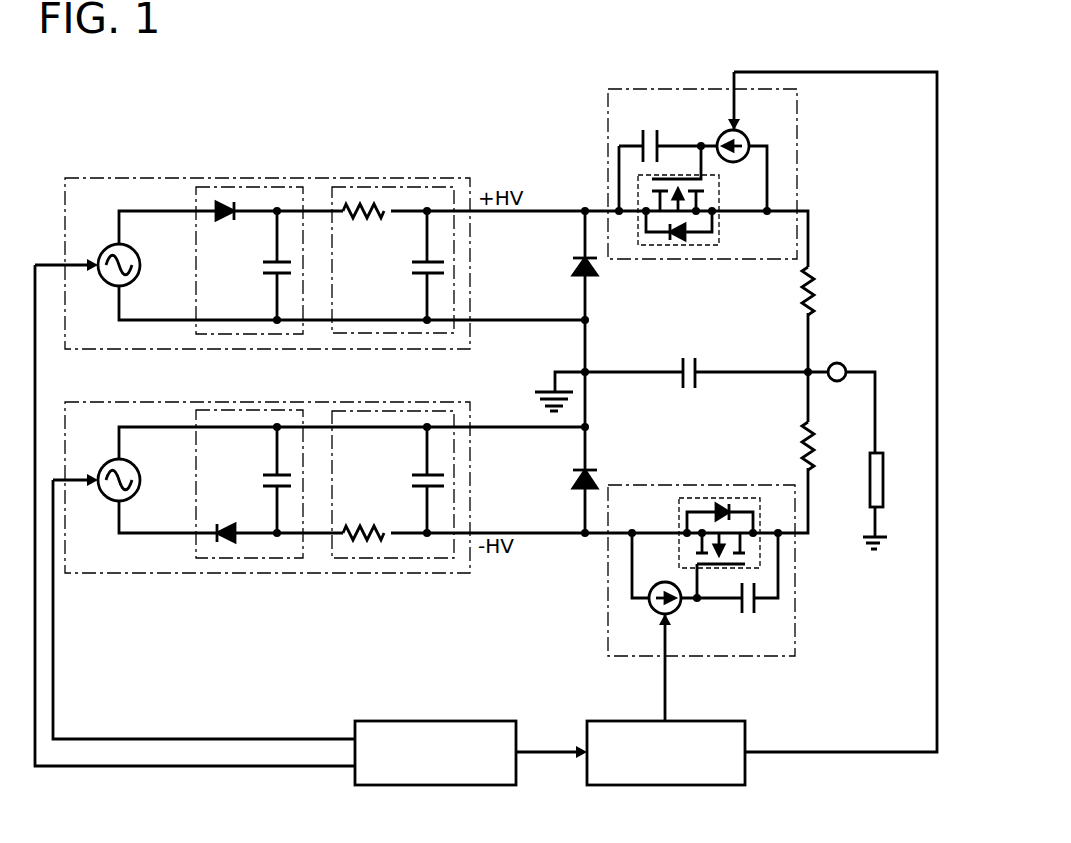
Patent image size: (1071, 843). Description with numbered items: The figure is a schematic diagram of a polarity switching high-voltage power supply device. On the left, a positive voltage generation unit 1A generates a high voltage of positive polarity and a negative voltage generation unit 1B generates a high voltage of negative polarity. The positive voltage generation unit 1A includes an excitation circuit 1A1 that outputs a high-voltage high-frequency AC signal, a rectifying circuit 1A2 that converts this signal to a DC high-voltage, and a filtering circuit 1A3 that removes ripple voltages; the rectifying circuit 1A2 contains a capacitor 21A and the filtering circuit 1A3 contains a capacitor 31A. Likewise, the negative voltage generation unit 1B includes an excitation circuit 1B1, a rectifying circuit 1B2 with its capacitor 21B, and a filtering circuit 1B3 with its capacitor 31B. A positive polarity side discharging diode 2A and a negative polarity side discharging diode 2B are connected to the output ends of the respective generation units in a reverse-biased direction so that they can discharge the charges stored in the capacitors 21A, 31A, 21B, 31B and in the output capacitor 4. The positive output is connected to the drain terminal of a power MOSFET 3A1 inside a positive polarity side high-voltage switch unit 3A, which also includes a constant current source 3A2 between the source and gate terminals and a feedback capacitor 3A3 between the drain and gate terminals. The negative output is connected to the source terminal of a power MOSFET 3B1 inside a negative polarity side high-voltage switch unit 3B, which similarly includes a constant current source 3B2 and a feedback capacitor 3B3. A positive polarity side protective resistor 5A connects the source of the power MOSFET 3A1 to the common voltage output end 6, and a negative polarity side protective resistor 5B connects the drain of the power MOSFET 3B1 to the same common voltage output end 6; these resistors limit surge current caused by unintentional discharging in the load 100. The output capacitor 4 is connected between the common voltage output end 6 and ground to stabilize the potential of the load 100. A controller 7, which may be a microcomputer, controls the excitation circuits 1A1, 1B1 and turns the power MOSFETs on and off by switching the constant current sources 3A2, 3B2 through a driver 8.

The positive voltage generation unit 1A is at (311, 177).
The excitation circuit 1A1 is at (109, 246).
The rectifying circuit 1A2 is at (257, 186).
The filtering circuit 1A3 is at (405, 186).
The capacitor 21A is at (266, 259).
The capacitor 31A is at (416, 259).
The negative voltage generation unit 1B is at (313, 400).
The excitation circuit 1B1 is at (109, 461).
The rectifying circuit 1B2 is at (247, 409).
The filtering circuit 1B3 is at (397, 410).
The capacitor 21B is at (266, 472).
The capacitor 31B is at (416, 472).
The positive polarity side discharging diode 2A is at (572, 267).
The negative polarity side discharging diode 2B is at (573, 483).
The positive polarity side high-voltage switch unit 3A is at (797, 128).
The power MOSFET 3A1 is at (720, 233).
The constant current source 3A2 is at (747, 133).
The feedback capacitor 3A3 is at (657, 132).
The negative polarity side high-voltage switch unit 3B is at (795, 628).
The power MOSFET 3B1 is at (679, 512).
The constant current source 3B2 is at (653, 613).
The feedback capacitor 3B3 is at (738, 605).
The output capacitor 4 is at (702, 361).
The positive polarity side protective resistor 5A is at (812, 277).
The negative polarity side protective resistor 5B is at (815, 435).
The common voltage output end 6 is at (842, 363).
The controller 7 is at (487, 721).
The driver 8 is at (727, 721).
The load 100 is at (885, 455).